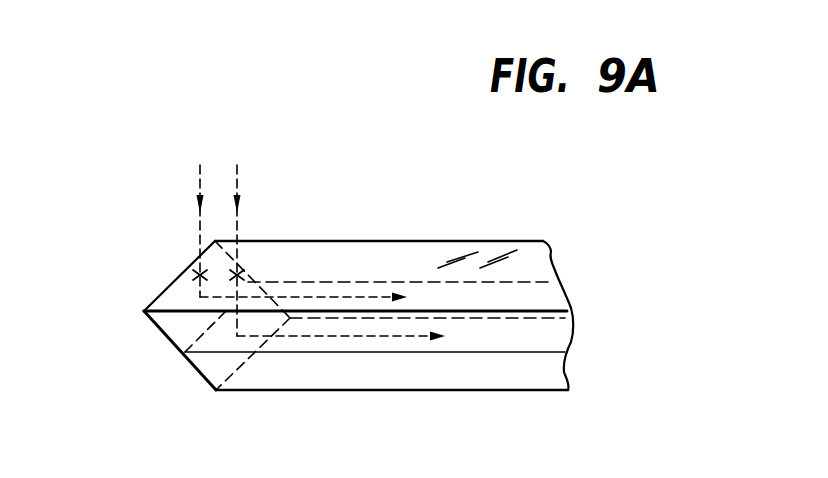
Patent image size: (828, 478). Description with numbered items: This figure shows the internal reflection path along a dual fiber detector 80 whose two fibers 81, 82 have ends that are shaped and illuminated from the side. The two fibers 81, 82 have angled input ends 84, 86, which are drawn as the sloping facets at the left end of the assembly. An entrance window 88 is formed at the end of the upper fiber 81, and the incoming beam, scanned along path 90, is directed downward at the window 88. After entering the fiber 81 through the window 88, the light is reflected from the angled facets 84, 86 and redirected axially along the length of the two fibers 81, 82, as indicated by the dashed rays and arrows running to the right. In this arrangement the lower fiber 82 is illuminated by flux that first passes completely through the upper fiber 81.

The dual fiber detector 80 is at (458, 218).
The fiber 81 is at (375, 240).
The fiber 82 is at (382, 390).
The input end 84 is at (160, 335).
The input end 86 is at (198, 372).
The entrance window 88 is at (185, 290).
The path 90 is at (237, 182).